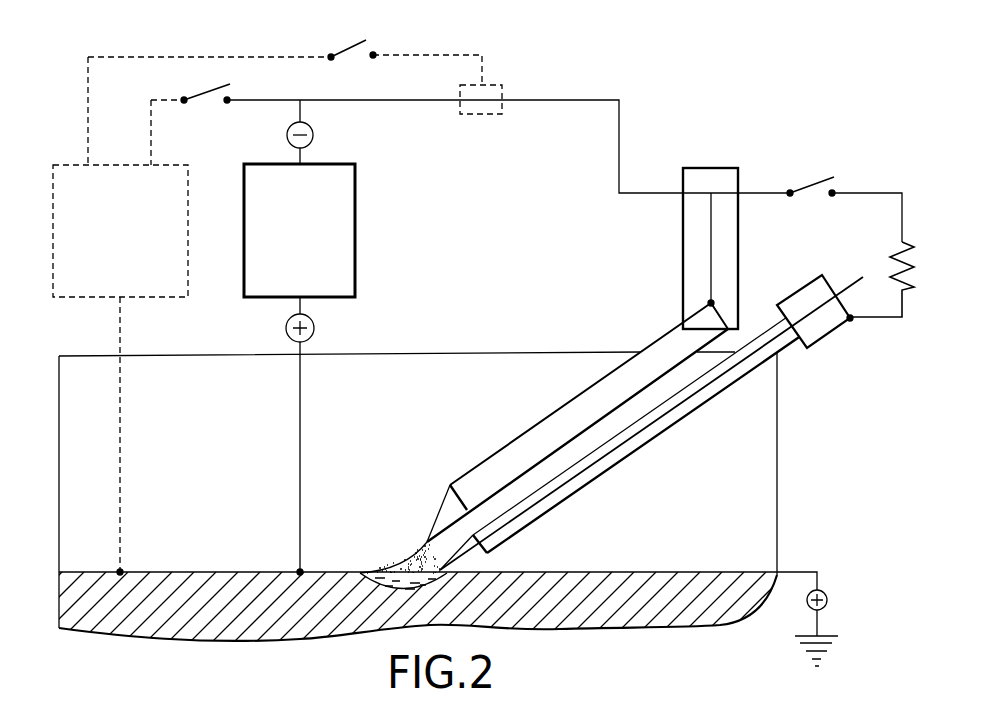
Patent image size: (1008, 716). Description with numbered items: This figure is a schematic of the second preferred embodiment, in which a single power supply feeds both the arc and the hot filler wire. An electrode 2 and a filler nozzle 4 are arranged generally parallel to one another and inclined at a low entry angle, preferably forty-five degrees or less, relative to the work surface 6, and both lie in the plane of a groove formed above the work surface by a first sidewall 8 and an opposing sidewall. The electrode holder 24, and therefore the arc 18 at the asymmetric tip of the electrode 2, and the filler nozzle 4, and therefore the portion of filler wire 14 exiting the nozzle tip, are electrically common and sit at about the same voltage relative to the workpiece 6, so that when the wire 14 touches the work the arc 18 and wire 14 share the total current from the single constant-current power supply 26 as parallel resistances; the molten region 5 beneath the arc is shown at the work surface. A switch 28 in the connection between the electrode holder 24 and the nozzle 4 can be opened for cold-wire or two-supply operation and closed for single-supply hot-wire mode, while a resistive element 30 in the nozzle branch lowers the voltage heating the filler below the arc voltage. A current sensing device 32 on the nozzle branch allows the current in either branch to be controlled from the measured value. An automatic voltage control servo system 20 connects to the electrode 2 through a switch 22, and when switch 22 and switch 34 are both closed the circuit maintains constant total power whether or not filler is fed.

The electrode 2 is at (533, 425).
The filler nozzle 4 is at (656, 436).
The melt pool 5 is at (352, 583).
The work surface 6 is at (647, 572).
The first sidewall 8 is at (189, 449).
The filler wire 14 is at (460, 562).
The arc 18 is at (400, 566).
The automatic voltage control servo system 20 is at (188, 210).
The switch 22 is at (203, 95).
The electrode holder 24 is at (738, 180).
The single constant-current power supply 26 is at (358, 210).
The switch 28 is at (810, 187).
The resistive element 30 is at (886, 258).
The current sensing device 32 is at (492, 84).
The switch 34 is at (343, 52).